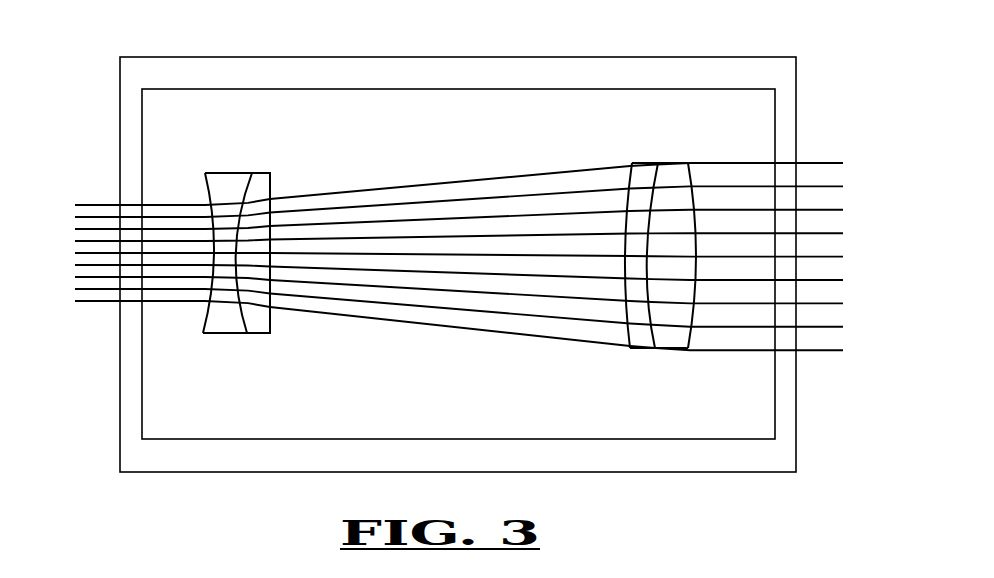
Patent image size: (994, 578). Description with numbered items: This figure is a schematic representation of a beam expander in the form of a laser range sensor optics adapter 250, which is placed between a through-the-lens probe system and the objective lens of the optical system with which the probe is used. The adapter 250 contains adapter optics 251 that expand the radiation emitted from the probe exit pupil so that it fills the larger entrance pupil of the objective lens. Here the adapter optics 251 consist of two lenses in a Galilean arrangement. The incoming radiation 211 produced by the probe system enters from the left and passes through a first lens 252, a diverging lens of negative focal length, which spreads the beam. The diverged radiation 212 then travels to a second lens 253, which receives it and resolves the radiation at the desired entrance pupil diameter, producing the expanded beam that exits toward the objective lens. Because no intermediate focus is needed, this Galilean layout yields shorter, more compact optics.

The laser range sensor optics adapter 250 is at (305, 57).
The adapter optics 251 is at (238, 89).
The first lens 252 is at (228, 320).
The second lens 253 is at (667, 340).
The radiation 211 is at (98, 277).
The diverged radiation 212 is at (818, 342).